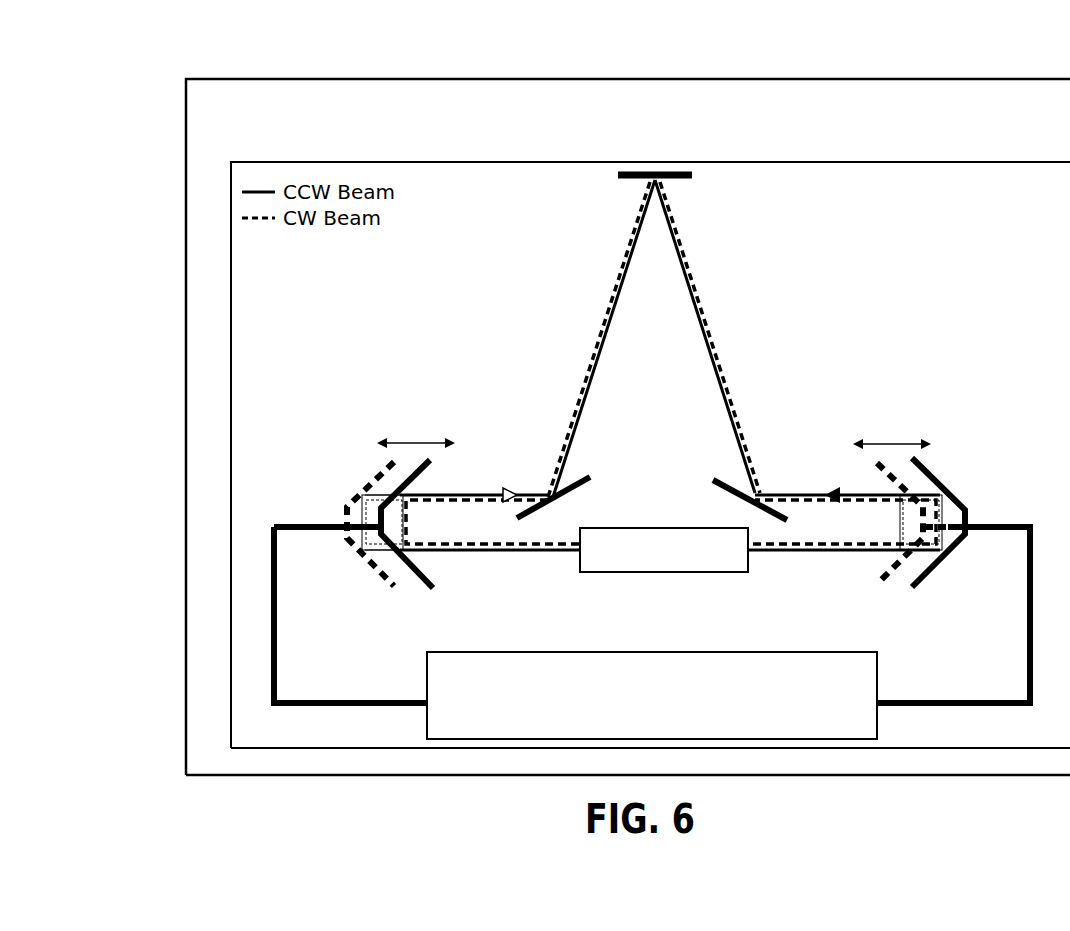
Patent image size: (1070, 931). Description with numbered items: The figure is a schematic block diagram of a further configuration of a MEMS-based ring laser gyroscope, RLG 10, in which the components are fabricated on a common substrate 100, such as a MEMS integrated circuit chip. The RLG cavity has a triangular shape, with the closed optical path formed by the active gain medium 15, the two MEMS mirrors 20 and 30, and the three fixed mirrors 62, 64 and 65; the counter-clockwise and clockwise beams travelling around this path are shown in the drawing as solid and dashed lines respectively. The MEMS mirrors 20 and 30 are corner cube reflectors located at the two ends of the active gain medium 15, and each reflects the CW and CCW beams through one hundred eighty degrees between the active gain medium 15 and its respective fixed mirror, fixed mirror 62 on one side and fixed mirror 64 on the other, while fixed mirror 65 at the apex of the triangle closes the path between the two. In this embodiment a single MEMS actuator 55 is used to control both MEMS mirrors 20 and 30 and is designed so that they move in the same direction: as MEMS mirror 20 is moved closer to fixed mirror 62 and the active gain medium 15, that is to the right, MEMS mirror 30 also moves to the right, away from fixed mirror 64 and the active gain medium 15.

The RLG 10 is at (146, 90).
The substrate 100 is at (1013, 128).
The fixed mirror 65 is at (678, 180).
The fixed mirror 62 is at (551, 504).
The fixed mirror 64 is at (724, 476).
The MEMS mirror 20 is at (418, 473).
The MEMS mirror 30 is at (934, 475).
The active gain medium 15 is at (651, 558).
The MEMS actuator 55 is at (648, 716).